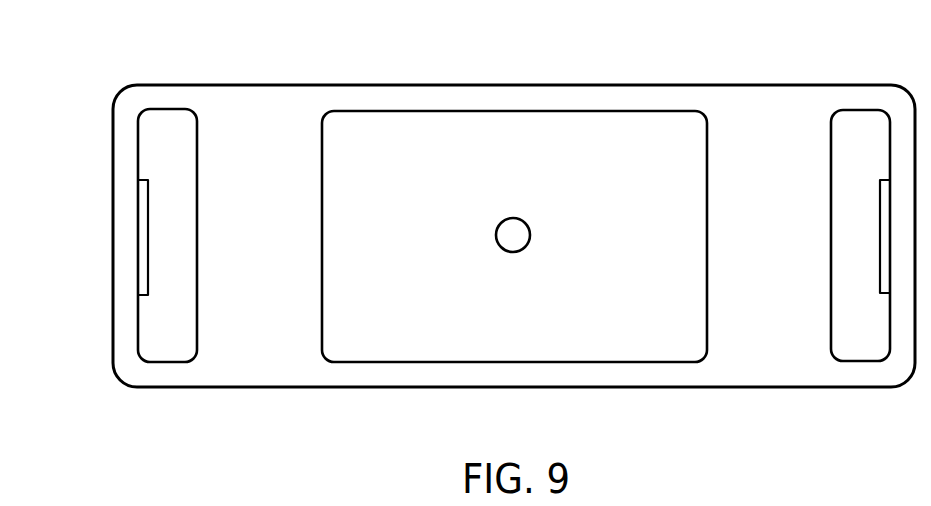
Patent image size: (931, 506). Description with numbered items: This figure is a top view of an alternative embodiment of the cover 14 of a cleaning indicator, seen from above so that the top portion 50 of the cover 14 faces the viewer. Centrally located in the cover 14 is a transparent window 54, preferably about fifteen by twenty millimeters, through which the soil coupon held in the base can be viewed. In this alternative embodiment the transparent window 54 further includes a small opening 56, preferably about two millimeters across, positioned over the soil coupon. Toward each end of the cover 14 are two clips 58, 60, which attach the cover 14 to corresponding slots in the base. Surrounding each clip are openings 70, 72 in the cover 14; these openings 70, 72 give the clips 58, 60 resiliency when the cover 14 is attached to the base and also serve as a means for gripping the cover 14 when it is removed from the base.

The cover 14 is at (80, 119).
The top portion 50 is at (253, 120).
The transparent window 54 is at (408, 158).
The small opening 56 is at (514, 233).
The clip 58 is at (146, 176).
The clip 60 is at (881, 176).
The opening 70 is at (168, 328).
The opening 72 is at (858, 330).